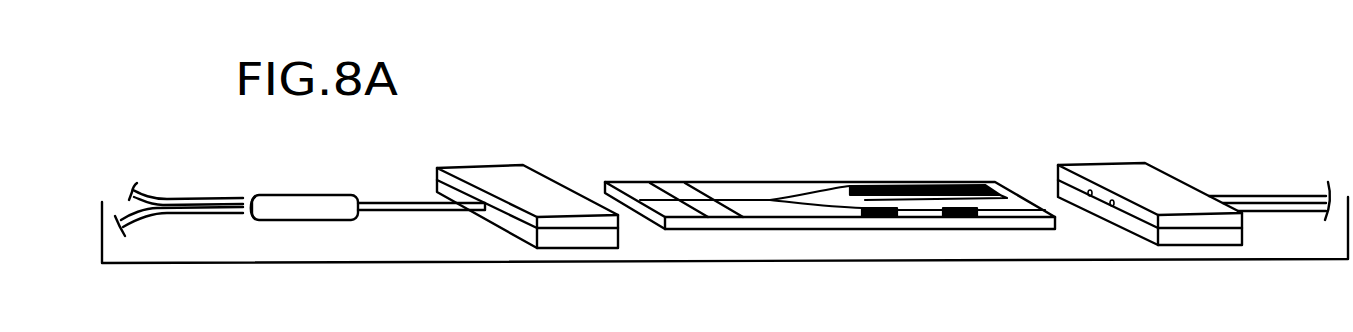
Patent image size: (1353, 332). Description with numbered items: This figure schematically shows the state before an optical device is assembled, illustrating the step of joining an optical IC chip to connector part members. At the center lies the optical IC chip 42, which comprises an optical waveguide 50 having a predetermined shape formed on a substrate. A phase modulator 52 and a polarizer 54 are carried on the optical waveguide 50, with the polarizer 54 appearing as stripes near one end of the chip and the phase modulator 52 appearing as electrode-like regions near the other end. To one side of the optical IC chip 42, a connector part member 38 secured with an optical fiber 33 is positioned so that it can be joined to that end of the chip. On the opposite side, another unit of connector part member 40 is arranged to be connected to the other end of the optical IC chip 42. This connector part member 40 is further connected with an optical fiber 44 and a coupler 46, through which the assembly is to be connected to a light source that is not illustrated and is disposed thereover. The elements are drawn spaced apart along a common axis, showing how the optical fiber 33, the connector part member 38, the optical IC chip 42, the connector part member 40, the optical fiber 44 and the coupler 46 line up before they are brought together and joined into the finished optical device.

The optical fiber 33 is at (1287, 195).
The connector part member 38 is at (1127, 178).
The connector part member 40 is at (540, 188).
The optical IC chip 42 is at (822, 174).
The optical fiber 44 is at (392, 200).
The coupler 46 is at (295, 197).
The optical waveguide 50 is at (742, 198).
The phase modulator 52 is at (952, 181).
The polarizer 54 is at (678, 190).